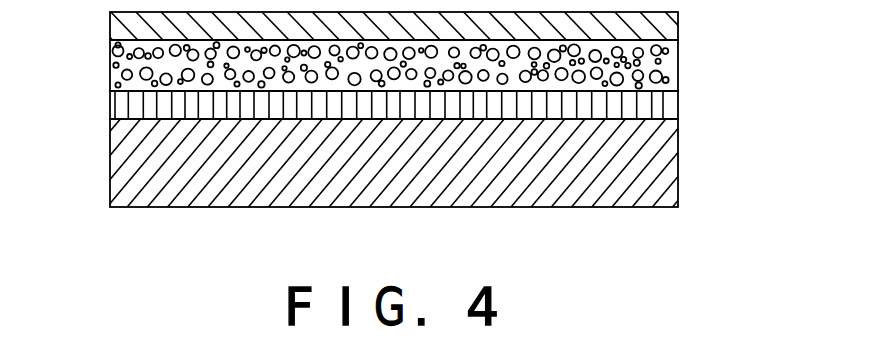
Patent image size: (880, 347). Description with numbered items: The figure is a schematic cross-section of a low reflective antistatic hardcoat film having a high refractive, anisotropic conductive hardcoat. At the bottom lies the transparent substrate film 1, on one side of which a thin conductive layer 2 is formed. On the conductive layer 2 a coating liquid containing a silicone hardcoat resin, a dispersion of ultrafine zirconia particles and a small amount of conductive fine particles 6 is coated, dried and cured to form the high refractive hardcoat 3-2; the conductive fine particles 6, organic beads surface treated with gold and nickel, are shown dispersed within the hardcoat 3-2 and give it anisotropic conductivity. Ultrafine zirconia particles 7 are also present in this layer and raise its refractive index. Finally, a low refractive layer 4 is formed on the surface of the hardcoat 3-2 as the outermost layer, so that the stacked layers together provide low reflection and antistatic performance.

The substrate film 1 is at (663, 163).
The conductive layer 2 is at (663, 107).
The high refractive hardcoat 3-2 is at (663, 70).
The low refractive layer 4 is at (663, 25).
The conductive fine particles 6 is at (110, 78).
The layer of ultrafine particles 7 is at (110, 50).